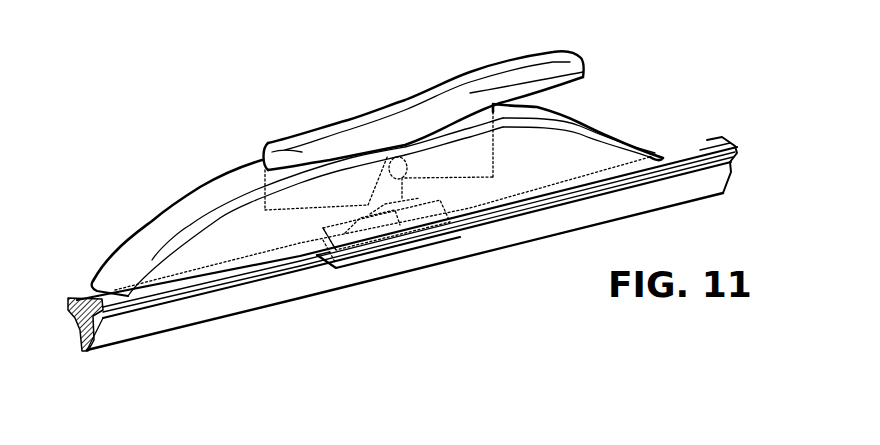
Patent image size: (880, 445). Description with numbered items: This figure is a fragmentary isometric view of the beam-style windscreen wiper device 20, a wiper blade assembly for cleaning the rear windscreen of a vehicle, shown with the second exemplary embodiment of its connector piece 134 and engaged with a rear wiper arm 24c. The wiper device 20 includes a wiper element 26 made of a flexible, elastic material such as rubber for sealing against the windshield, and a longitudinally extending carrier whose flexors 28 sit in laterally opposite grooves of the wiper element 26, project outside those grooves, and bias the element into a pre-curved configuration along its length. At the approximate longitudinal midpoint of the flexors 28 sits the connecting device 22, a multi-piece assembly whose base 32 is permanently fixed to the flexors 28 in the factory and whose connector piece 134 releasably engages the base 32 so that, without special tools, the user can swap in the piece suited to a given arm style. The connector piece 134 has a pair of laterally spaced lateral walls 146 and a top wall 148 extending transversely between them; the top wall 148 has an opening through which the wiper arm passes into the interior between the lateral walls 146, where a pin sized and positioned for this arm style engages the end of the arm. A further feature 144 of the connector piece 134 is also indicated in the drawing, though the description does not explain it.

The windscreen wiper device 20 is at (666, 74).
The connecting device 22 is at (393, 181).
The Type D rear wiper arm 24c is at (418, 92).
The wiper element 26 is at (290, 290).
The flexors 28 is at (742, 153).
The base 32 is at (438, 242).
The second exemplary connector piece 134 is at (630, 150).
The connector base 144 is at (363, 268).
The lateral walls 146 is at (229, 247).
The top wall 148 is at (216, 192).